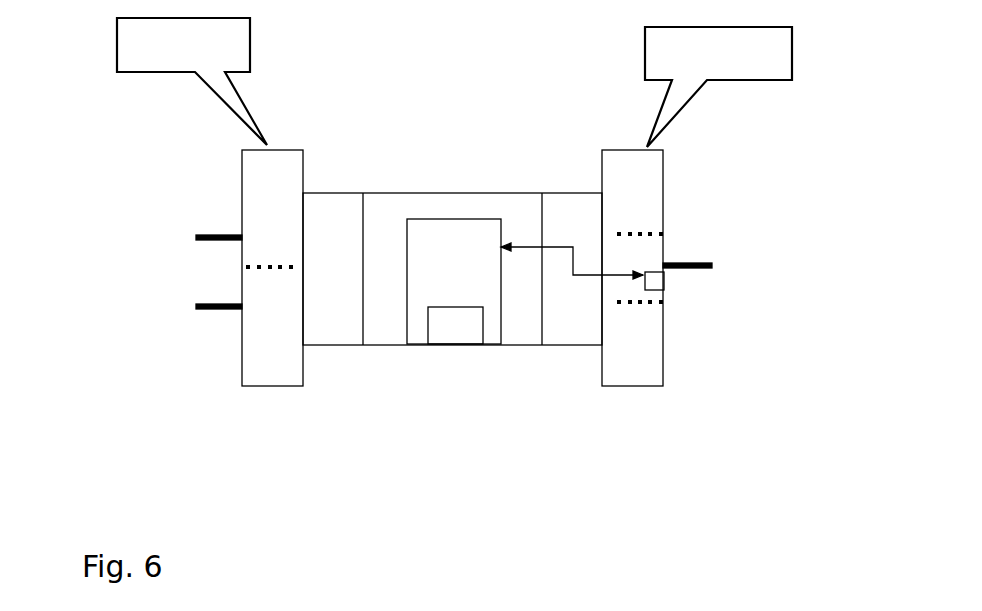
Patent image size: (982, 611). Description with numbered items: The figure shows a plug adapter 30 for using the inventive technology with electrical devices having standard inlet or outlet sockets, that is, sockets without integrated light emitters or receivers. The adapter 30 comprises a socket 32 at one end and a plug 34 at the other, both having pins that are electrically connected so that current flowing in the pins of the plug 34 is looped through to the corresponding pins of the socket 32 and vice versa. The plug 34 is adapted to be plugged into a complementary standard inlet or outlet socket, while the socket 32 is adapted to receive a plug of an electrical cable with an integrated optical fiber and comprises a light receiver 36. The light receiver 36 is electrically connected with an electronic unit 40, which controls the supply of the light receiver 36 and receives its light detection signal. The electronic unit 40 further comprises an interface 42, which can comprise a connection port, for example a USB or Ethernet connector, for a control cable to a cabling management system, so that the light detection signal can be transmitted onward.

The plug adapter 30 is at (497, 74).
The socket 32 is at (640, 387).
The plug 34 is at (265, 387).
The light receiver 36 is at (662, 384).
The electronic unit 40 is at (525, 281).
The interface 42 is at (313, 393).